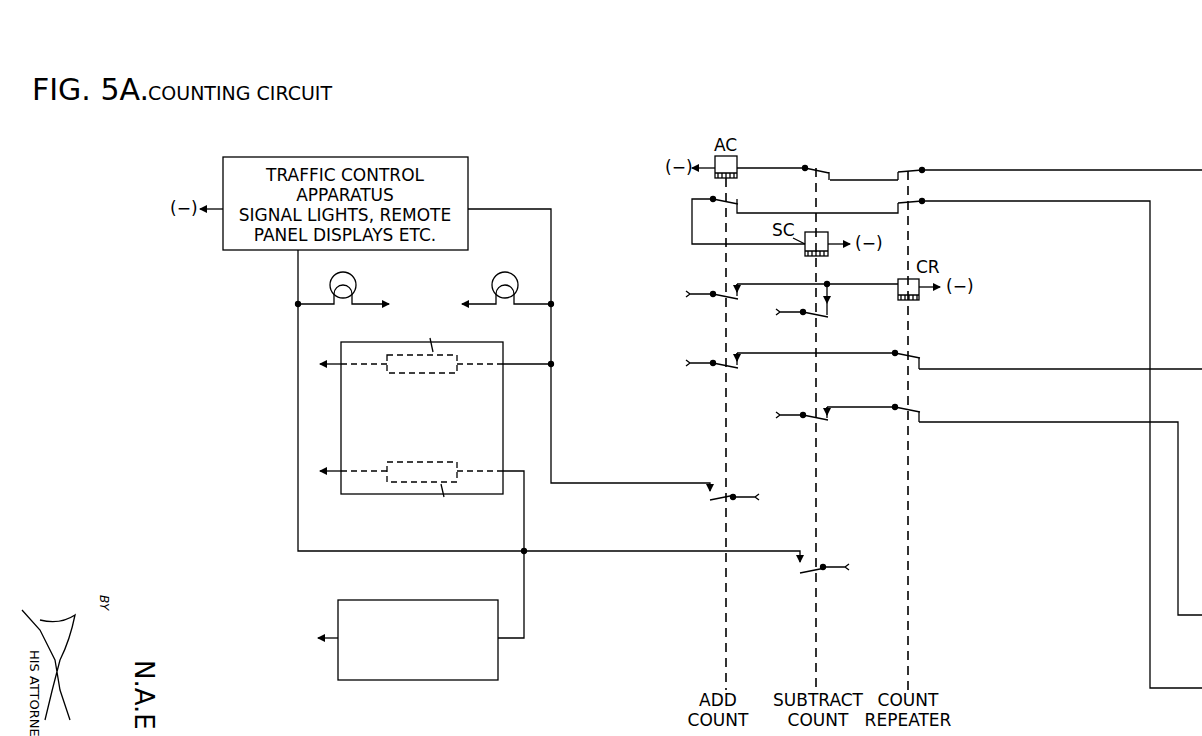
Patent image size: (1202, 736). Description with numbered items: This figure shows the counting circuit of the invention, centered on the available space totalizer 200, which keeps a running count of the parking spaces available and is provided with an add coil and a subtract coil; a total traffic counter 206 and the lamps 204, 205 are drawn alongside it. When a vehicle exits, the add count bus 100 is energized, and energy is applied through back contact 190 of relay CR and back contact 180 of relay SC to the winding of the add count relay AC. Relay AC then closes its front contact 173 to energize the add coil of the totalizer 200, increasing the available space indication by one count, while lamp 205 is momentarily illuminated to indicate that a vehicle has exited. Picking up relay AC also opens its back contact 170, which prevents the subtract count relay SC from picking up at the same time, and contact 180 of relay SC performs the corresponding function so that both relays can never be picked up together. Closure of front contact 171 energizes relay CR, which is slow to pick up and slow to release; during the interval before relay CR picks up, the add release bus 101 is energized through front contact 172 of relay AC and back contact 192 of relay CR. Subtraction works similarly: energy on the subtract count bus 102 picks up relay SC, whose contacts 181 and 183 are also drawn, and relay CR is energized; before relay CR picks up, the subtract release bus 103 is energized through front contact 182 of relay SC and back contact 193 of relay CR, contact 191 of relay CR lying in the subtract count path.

The add count bus 100 is at (1142, 169).
The add release bus 101 is at (1100, 368).
The subtract count bus 102 is at (1118, 201).
The subtract release bus 103 is at (1018, 422).
The back contact of relay AC 170 is at (730, 201).
The front contact of relay AC 171 is at (712, 300).
The front contact of relay AC 172 is at (728, 366).
The front contact of relay AC 173 is at (712, 500).
The back contact of relay SC 180 is at (851, 162).
The contact of relay SC 181 is at (819, 317).
The front contact of relay SC 182 is at (819, 420).
The contact of relay SC 183 is at (824, 571).
The back contact of relay CR 190 is at (903, 165).
The contact of relay CR 191 is at (896, 204).
The back contact of relay CR 192 is at (912, 352).
The back contact of relay CR 193 is at (912, 406).
The available space totalizer 200 is at (341, 404).
The lamp 204 is at (357, 286).
The lamp 205 is at (491, 286).
The total traffic counter 206 is at (430, 696).